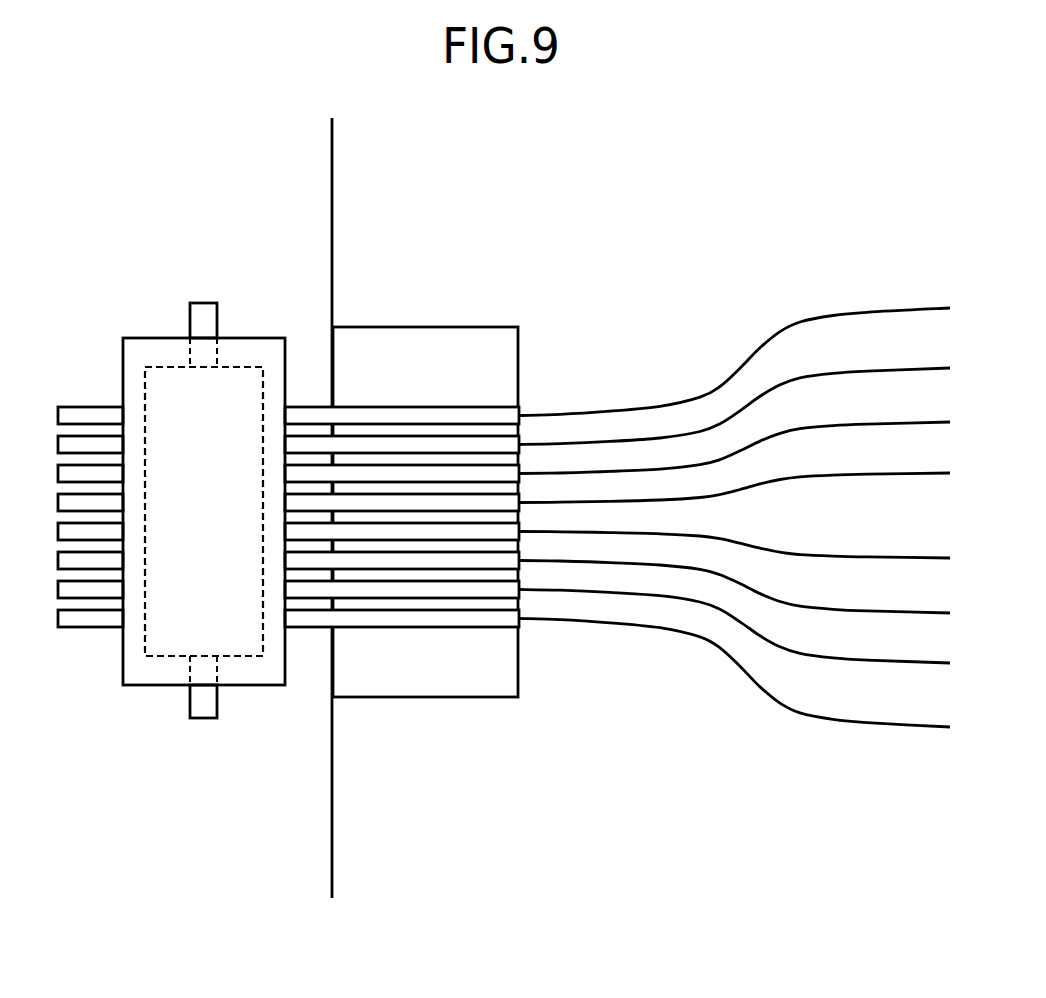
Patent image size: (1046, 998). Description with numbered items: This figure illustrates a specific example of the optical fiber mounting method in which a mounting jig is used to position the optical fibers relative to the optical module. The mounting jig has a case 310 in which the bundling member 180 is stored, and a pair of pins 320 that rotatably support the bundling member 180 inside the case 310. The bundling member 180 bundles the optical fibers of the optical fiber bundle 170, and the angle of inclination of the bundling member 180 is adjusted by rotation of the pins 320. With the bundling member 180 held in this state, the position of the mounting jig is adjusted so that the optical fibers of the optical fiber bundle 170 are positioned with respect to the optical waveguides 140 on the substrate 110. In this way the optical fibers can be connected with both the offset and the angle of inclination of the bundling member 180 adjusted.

The substrate 110 is at (332, 198).
The optical waveguides 140 is at (862, 295).
The optical fiber bundle 170 is at (447, 372).
The bundling member 180 is at (145, 377).
The case 310 is at (260, 337).
The pins 320 is at (205, 303).